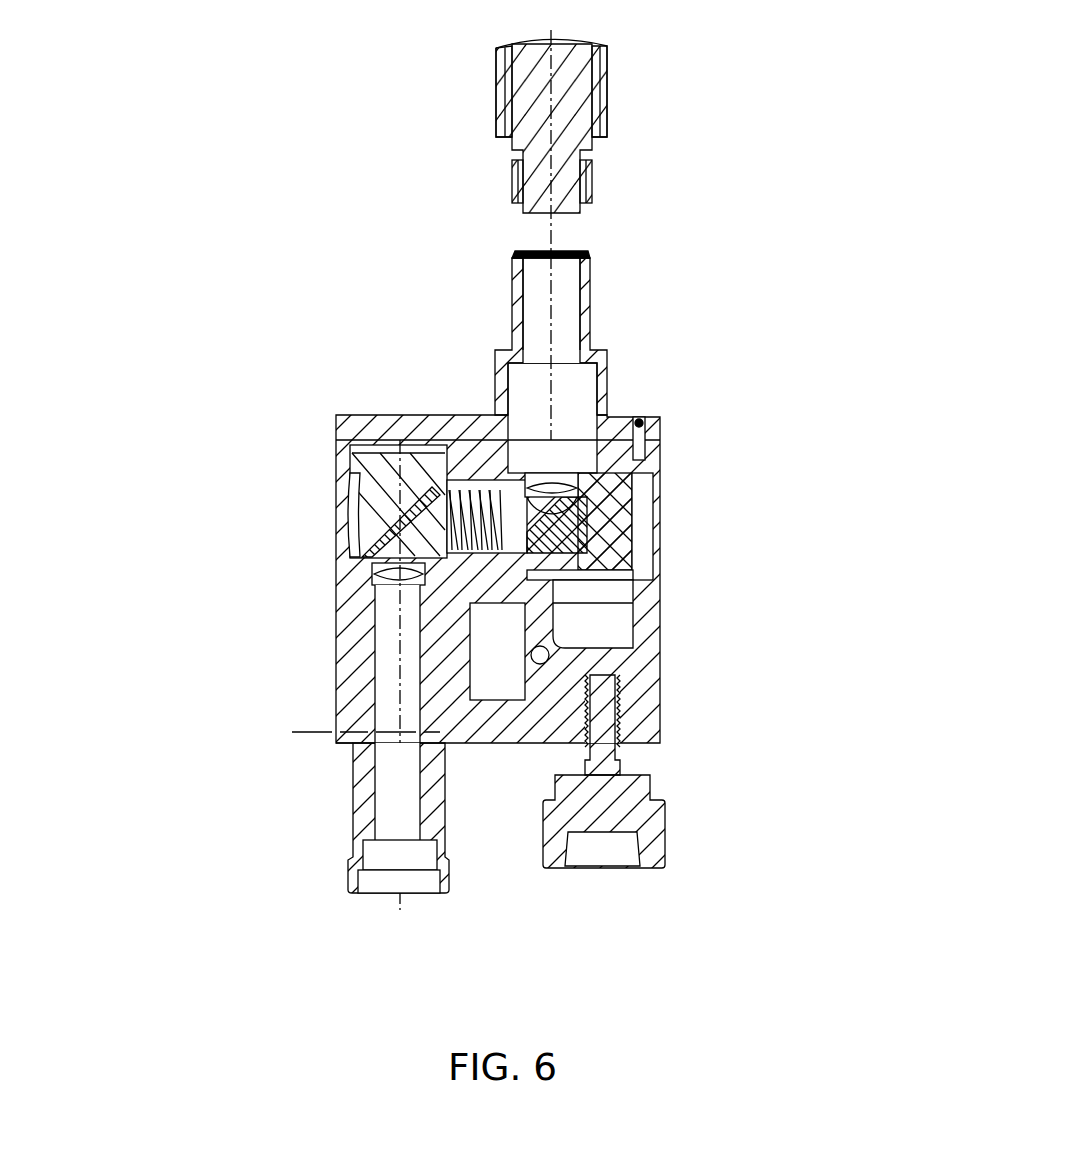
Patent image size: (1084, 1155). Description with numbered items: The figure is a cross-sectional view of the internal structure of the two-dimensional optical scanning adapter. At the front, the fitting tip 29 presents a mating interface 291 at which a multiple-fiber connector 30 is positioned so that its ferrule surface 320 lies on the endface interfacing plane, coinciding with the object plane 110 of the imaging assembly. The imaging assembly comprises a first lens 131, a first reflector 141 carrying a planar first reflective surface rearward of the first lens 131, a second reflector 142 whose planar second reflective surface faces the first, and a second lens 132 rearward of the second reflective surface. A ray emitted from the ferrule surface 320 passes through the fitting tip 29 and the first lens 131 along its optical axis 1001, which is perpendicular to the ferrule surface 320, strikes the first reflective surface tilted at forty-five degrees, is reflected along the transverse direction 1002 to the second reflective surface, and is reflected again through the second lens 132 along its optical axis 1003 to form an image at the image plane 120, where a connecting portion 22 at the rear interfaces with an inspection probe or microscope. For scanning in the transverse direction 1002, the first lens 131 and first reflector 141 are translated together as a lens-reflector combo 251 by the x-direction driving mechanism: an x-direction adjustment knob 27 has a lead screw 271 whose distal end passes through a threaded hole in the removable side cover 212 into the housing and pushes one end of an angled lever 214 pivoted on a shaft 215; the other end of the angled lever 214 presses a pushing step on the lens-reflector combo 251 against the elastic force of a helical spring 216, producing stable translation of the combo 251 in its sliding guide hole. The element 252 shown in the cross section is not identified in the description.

The multiple-fiber connector 30 is at (567, 112).
The mating interface 291 is at (533, 262).
The ferrule surface 320 is at (578, 233).
The object plane 110 is at (598, 265).
The optical axis 1001 is at (552, 320).
The fitting tip 29 is at (572, 383).
The helical spring 216 is at (410, 414).
The transverse direction 1002 is at (527, 512).
The first lens 131 is at (562, 475).
The piston block 252 is at (360, 478).
The first reflector 141 is at (578, 527).
The second reflector 142 is at (350, 528).
The lens-reflector combo 251 is at (602, 547).
The second lens 132 is at (388, 583).
The angled lever 214 is at (600, 650).
The removable side cover 212 is at (645, 688).
The optical axis 1003 is at (397, 686).
The image plane 120 is at (320, 733).
The lead screw 271 is at (622, 717).
The connecting portion 22 is at (350, 782).
The x-direction adjustment knob 27 is at (612, 850).
The shaft 215 is at (543, 658).